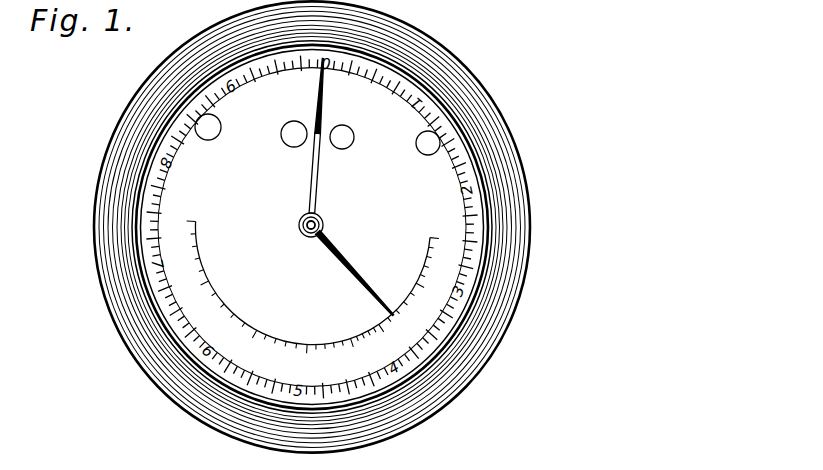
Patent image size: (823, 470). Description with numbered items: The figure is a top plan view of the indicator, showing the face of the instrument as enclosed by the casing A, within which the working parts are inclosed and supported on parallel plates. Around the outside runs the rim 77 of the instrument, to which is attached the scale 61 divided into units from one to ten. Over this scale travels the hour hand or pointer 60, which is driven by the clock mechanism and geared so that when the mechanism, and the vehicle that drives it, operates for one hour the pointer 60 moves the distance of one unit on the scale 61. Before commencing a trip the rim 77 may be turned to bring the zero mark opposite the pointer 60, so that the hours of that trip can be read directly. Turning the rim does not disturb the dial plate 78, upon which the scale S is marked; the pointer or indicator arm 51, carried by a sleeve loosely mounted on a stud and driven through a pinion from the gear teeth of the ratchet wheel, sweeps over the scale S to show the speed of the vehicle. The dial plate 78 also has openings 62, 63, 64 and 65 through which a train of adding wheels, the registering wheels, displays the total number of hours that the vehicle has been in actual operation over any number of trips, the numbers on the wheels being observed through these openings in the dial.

The casing A is at (102, 216).
The scale 61 is at (476, 227).
The rim 77 is at (477, 347).
The hour hand or pointer 60 is at (322, 176).
The pointer or indicator arm 51 is at (334, 268).
The opening 62 is at (218, 118).
The opening 63 is at (286, 124).
The opening 64 is at (350, 128).
The opening 65 is at (416, 144).
The dial plate 78 is at (315, 288).
The scale S is at (223, 307).